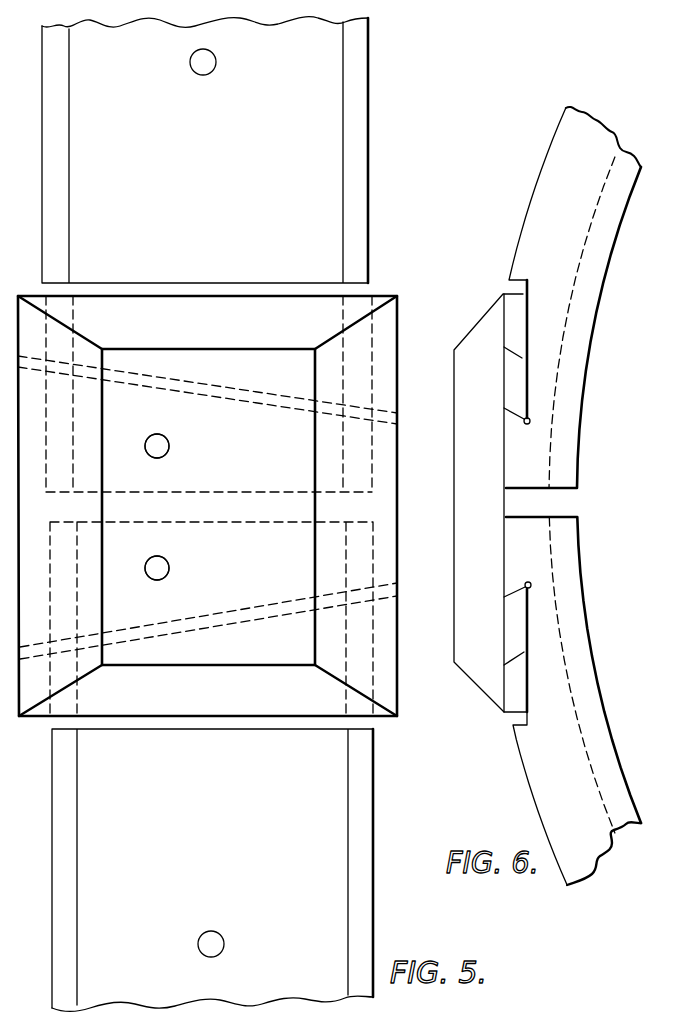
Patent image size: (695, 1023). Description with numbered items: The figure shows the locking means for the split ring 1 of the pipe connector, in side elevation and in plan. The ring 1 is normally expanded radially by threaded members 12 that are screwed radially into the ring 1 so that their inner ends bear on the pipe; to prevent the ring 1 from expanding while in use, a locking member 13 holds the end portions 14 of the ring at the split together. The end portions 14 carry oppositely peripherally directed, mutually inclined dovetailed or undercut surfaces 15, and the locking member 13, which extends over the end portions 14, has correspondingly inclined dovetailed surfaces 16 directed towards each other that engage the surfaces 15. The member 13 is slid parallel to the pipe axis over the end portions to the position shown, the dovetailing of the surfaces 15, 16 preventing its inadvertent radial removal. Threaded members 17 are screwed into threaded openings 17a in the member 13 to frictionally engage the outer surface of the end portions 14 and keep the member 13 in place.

In FIG. 5, the ring 1 is at (207, 233).
In FIG. 6, the ring 1 is at (535, 223).
In FIG. 5, the threaded member 12 is at (205, 74).
In FIG. 5, the locking member 13 is at (221, 468).
In FIG. 6, the locking member 13 is at (490, 475).
In FIG. 6, the end portions 14 is at (535, 408).
In FIG. 5, the dovetailed surfaces 15 is at (235, 622).
In FIG. 6, the dovetailed surfaces 15 is at (529, 590).
In FIG. 5, the dovetailed surfaces 16 is at (224, 394).
In FIG. 6, the dovetailed surfaces 16 is at (523, 425).
In FIG. 5, the threaded members 17 is at (161, 443).
In FIG. 5, the threaded openings 17a is at (148, 440).